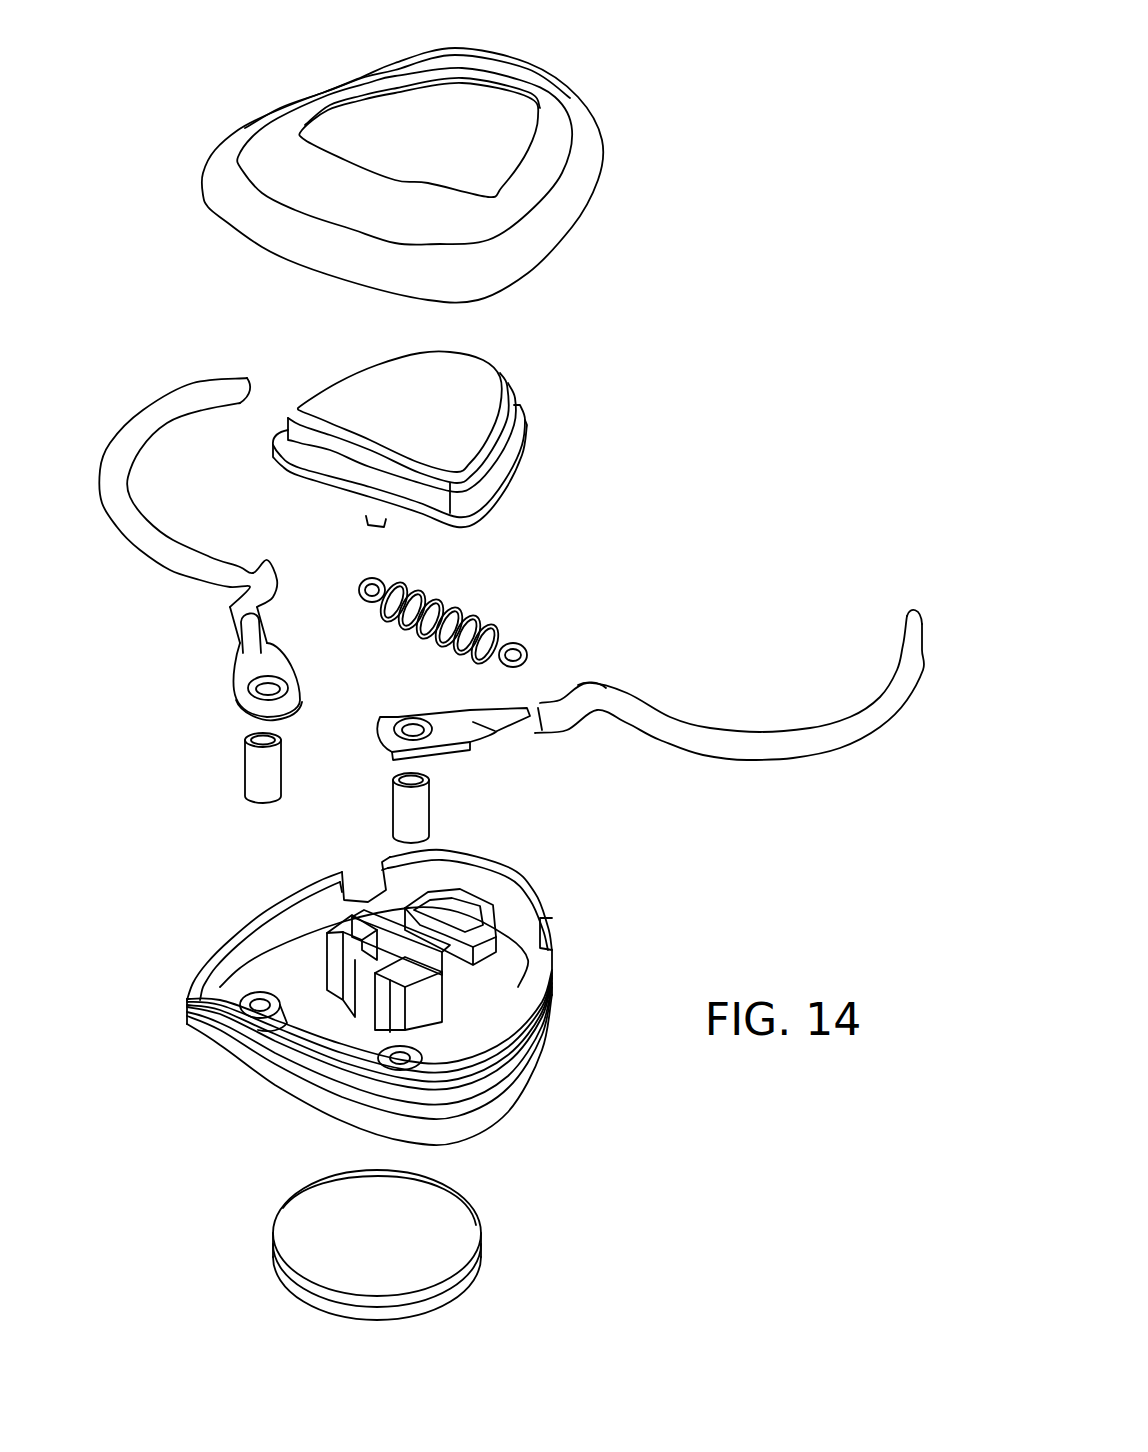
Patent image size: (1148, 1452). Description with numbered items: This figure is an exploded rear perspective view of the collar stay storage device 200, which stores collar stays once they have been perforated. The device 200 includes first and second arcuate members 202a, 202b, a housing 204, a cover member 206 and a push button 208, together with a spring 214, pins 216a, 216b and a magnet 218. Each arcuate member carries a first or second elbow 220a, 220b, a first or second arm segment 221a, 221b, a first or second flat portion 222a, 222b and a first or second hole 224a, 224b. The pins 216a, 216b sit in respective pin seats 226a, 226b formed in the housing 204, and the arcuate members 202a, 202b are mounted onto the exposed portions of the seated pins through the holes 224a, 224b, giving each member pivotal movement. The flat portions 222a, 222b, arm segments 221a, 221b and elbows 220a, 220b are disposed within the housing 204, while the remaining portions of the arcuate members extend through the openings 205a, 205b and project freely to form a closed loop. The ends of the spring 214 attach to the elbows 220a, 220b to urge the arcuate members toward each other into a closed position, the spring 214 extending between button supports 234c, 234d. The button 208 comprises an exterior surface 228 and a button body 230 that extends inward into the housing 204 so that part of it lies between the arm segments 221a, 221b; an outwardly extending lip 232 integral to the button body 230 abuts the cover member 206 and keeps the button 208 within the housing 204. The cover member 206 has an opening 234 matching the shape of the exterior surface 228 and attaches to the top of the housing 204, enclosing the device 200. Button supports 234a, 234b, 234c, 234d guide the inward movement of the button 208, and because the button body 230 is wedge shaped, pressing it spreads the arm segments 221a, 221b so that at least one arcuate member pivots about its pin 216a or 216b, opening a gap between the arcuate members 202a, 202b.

The collar stay storage device 200 is at (729, 104).
The first arcuate member 202a is at (729, 716).
The second arcuate member 202b is at (234, 484).
The housing 204 is at (405, 993).
The opening 205a is at (549, 952).
The opening 205b is at (352, 890).
The cover member 206 is at (437, 155).
The push button 208 is at (426, 421).
The spring 214 is at (472, 598).
The pin 216a is at (412, 815).
The pin 216b is at (262, 775).
The magnet 218 is at (354, 1248).
The first elbow 220a is at (596, 690).
The second elbow 220b is at (265, 588).
The first arm segment 221a is at (548, 720).
The second arm segment 221b is at (233, 613).
The first flat portion 222a is at (421, 734).
The second flat portion 222b is at (259, 680).
The first hole 224a is at (417, 732).
The second hole 224b is at (263, 695).
The pin seat 226a is at (258, 1008).
The pin seat 226b is at (400, 1060).
The exterior surface 228 is at (385, 402).
The button body 230 is at (490, 468).
The lip 232 is at (292, 470).
The opening 234 is at (442, 121).
The button support 234a is at (422, 1010).
The button support 234b is at (335, 965).
The button support 234c is at (452, 980).
The button support 234d is at (432, 918).